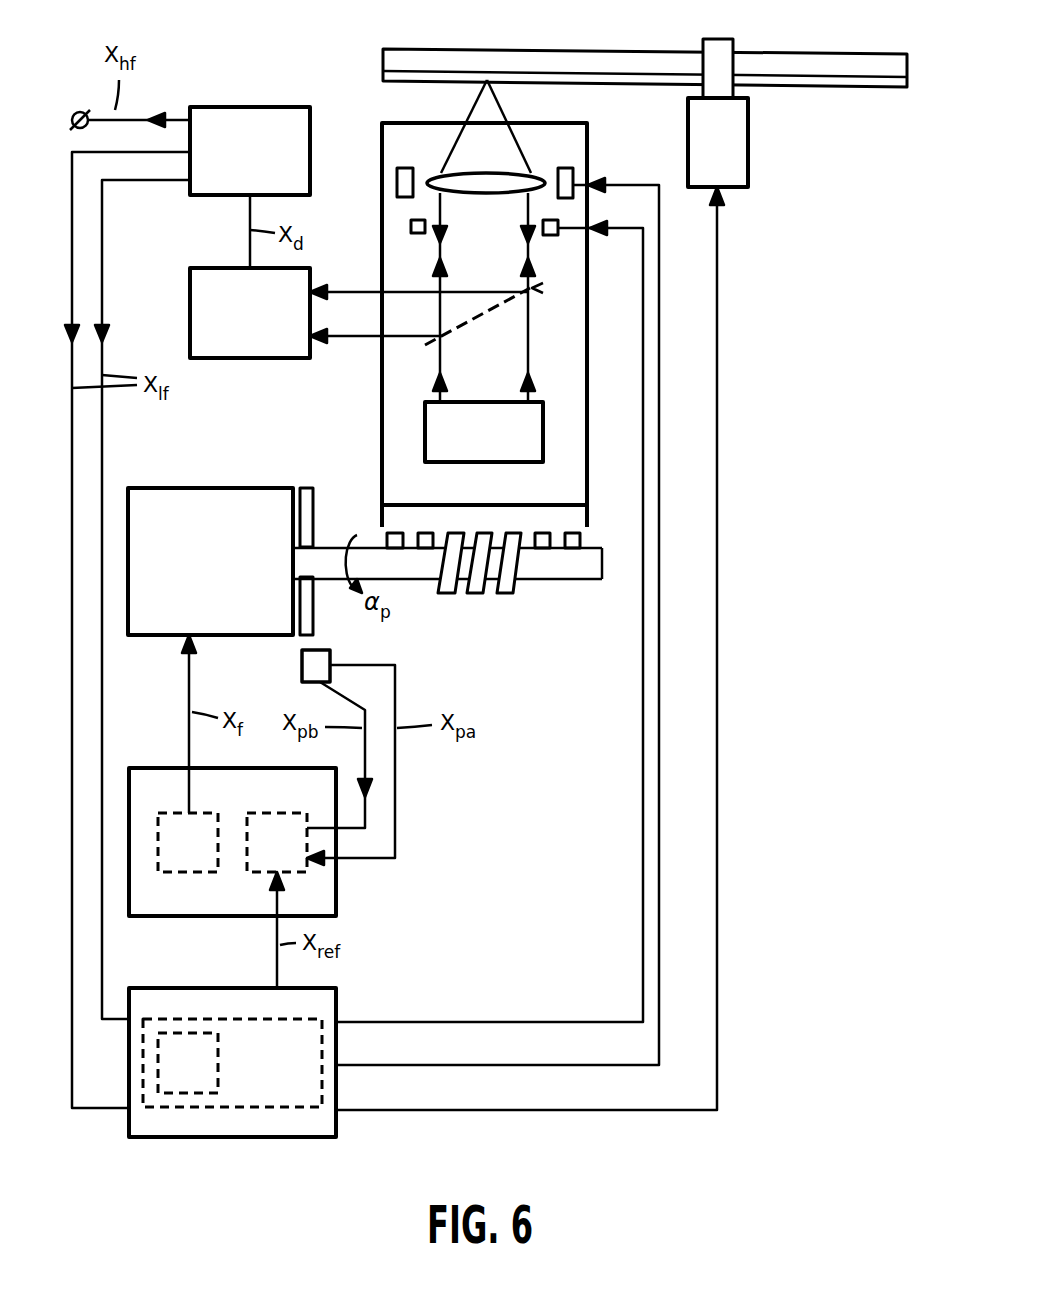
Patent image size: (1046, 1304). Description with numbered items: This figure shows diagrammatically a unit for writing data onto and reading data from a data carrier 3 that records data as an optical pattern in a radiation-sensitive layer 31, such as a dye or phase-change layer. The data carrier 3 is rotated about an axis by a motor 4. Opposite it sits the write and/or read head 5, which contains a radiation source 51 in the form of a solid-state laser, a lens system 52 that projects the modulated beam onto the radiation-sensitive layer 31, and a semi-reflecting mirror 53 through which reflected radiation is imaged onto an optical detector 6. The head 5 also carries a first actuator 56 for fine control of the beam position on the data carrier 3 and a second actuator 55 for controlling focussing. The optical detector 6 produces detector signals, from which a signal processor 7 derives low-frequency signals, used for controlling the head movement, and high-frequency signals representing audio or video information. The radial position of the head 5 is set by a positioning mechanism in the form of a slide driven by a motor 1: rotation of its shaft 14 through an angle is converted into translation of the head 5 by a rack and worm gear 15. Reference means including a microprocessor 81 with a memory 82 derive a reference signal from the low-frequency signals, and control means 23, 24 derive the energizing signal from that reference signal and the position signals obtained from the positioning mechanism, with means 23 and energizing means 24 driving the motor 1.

The motor 1 is at (165, 488).
The data carrier 3 is at (815, 65).
The radiation-sensitive layer 31 is at (842, 82).
The motor 4 is at (748, 150).
The write and/or read head 5 is at (382, 405).
The radiation source 51 is at (425, 438).
The lens system 52 is at (487, 193).
The semi-reflecting mirror 53 is at (540, 296).
The second actuator 55 is at (558, 235).
The first actuator 56 is at (588, 170).
The optical detector 6 is at (238, 358).
The signal processor 7 is at (274, 107).
The shaft 14 is at (328, 548).
The rack and worm gear 15 is at (542, 602).
The means 23 is at (260, 873).
The energizing means 24 is at (188, 873).
The microprocessor 81 is at (260, 1107).
The memory 82 is at (188, 1107).